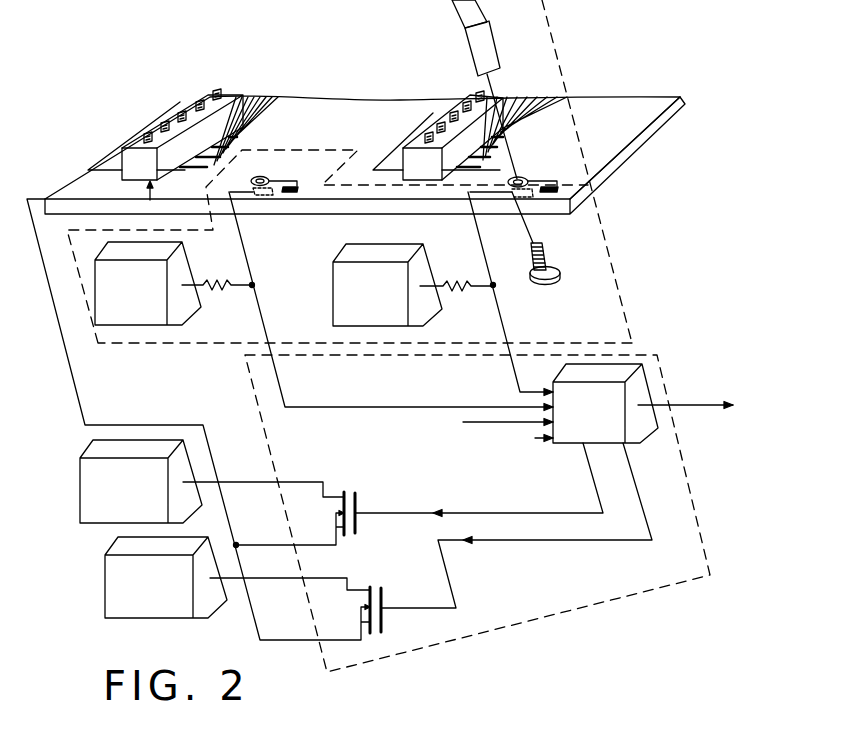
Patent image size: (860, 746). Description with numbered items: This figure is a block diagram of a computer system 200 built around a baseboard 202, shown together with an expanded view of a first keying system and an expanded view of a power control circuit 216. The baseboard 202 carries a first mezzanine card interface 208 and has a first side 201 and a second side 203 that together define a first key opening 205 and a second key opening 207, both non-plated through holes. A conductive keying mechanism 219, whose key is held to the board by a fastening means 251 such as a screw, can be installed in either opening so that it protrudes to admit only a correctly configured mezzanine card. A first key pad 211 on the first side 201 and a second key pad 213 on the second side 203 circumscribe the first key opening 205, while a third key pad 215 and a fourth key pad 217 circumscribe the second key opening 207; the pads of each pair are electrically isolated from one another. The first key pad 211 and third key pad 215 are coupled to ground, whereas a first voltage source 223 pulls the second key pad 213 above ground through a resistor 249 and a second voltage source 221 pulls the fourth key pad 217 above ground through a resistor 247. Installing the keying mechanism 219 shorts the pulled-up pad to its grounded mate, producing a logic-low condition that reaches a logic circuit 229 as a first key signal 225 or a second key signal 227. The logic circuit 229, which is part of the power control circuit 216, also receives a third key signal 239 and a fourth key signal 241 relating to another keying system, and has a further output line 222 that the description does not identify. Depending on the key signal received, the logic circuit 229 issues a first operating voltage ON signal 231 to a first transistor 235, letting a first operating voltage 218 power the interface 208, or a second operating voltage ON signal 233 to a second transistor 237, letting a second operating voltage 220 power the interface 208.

The computer system 200 is at (181, 660).
The first side 201 is at (638, 108).
The baseboard 202 is at (640, 140).
The second side 203 is at (607, 185).
The first key opening 205 is at (528, 191).
The second key opening 207 is at (267, 190).
The first mezzanine card interface 208 is at (178, 97).
The first key pad 211 is at (525, 177).
The second key pad 213 is at (512, 196).
The third key pad 215 is at (268, 178).
The power control circuit 216 is at (691, 497).
The fourth key pad 217 is at (253, 194).
The first operating voltage 218 is at (80, 494).
The keying mechanism 219 is at (485, 47).
The second operating voltage 220 is at (105, 592).
The second voltage source 221 is at (183, 267).
The output signal 222 is at (700, 404).
The first voltage source 223 is at (333, 300).
The first key signal 225 is at (507, 343).
The second key signal 227 is at (343, 406).
The logic circuit 229 is at (645, 440).
The first operating voltage ON signal 231 is at (480, 512).
The second operating voltage ON signal 233 is at (510, 540).
The first transistor 235 is at (347, 478).
The second transistor 237 is at (370, 576).
The third key signal 239 is at (478, 423).
The fourth key signal 241 is at (547, 439).
The resistor 247 is at (229, 290).
The resistor 249 is at (468, 292).
The fastening means 251 is at (552, 285).